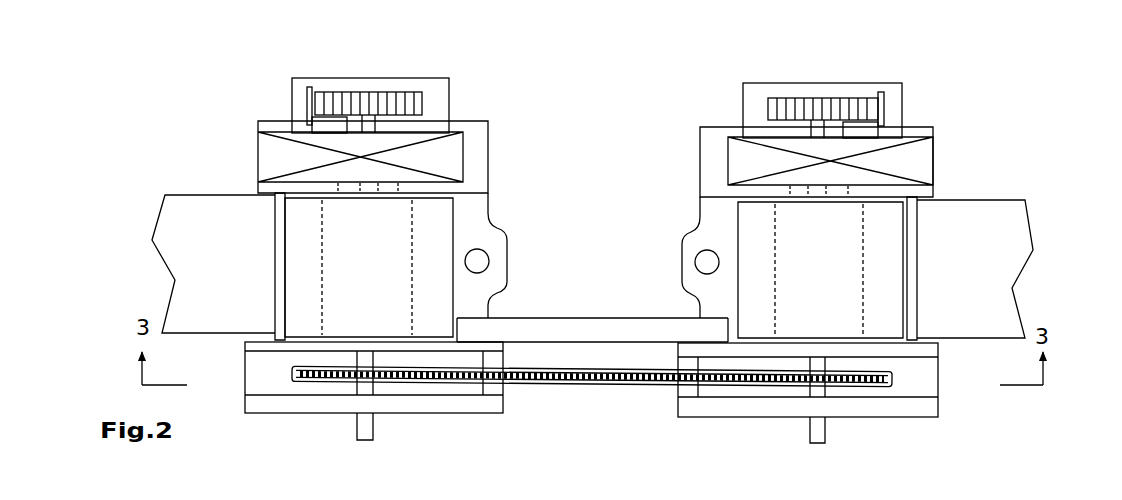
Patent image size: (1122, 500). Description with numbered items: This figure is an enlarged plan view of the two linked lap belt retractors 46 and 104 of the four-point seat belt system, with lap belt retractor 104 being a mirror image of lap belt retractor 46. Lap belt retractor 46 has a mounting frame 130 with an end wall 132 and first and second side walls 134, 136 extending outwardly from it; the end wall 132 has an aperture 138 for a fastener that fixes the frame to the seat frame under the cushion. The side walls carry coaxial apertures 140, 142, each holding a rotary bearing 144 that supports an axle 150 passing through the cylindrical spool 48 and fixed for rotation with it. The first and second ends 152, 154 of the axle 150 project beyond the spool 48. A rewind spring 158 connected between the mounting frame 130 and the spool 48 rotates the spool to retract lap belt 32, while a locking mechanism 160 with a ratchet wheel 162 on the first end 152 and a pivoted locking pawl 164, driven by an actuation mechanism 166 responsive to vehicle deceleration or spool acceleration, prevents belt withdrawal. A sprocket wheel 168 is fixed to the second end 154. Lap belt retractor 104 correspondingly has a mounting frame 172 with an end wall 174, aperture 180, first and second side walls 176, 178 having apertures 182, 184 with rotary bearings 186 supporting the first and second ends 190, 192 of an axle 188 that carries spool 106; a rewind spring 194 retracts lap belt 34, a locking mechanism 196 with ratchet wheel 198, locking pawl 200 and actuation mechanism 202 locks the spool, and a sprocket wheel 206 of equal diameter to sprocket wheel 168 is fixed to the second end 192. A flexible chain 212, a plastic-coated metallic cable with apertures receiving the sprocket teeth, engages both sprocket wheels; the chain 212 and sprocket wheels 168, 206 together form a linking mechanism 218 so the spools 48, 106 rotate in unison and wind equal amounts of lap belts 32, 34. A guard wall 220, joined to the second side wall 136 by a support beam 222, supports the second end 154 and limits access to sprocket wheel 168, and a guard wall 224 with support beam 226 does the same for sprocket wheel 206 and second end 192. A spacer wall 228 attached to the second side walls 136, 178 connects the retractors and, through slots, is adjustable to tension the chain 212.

The lap belt 32 is at (987, 262).
The lap belt 34 is at (203, 237).
The lap belt retractor 46 is at (824, 84).
The spool 48 is at (865, 243).
The lap belt retractor 104 is at (352, 76).
The spool 106 is at (322, 240).
The mounting frame 130 is at (716, 303).
The end wall 132 is at (722, 227).
The first side wall 134 is at (910, 188).
The second side wall 136 is at (826, 413).
The aperture 138 is at (700, 262).
The aperture 140 is at (787, 190).
The aperture 142 is at (882, 352).
The rotary bearing 144 is at (843, 193).
The axle 150 is at (808, 433).
The first end 152 is at (820, 128).
The second end 154 is at (826, 444).
The rewind spring 158 is at (922, 154).
The locking mechanism 160 is at (809, 80).
The ratchet wheel 162 is at (800, 107).
The locking pawl 164 is at (883, 100).
The actuation mechanism 166 is at (866, 132).
The sprocket wheel 168 is at (866, 390).
The mounting frame 172 is at (465, 302).
The end wall 174 is at (470, 222).
The first side wall 176 is at (273, 178).
The second side wall 178 is at (267, 345).
The aperture 180 is at (489, 260).
The aperture 182 is at (417, 180).
The aperture 184 is at (373, 413).
The rotary bearing 186 is at (388, 187).
The axle 188 is at (356, 426).
The first end 190 is at (380, 124).
The second end 192 is at (365, 441).
The rewind spring 194 is at (280, 150).
The locking mechanism 196 is at (381, 74).
The ratchet wheel 198 is at (370, 100).
The locking pawl 200 is at (309, 103).
The actuation mechanism 202 is at (312, 125).
The sprocket wheel 206 is at (403, 389).
The flexible chain 212 is at (621, 387).
The linking mechanism 218 is at (553, 409).
The guard wall 220 is at (698, 408).
The support beam 222 is at (688, 367).
The guard wall 224 is at (278, 400).
The support beam 226 is at (495, 363).
The spacer wall 228 is at (592, 332).